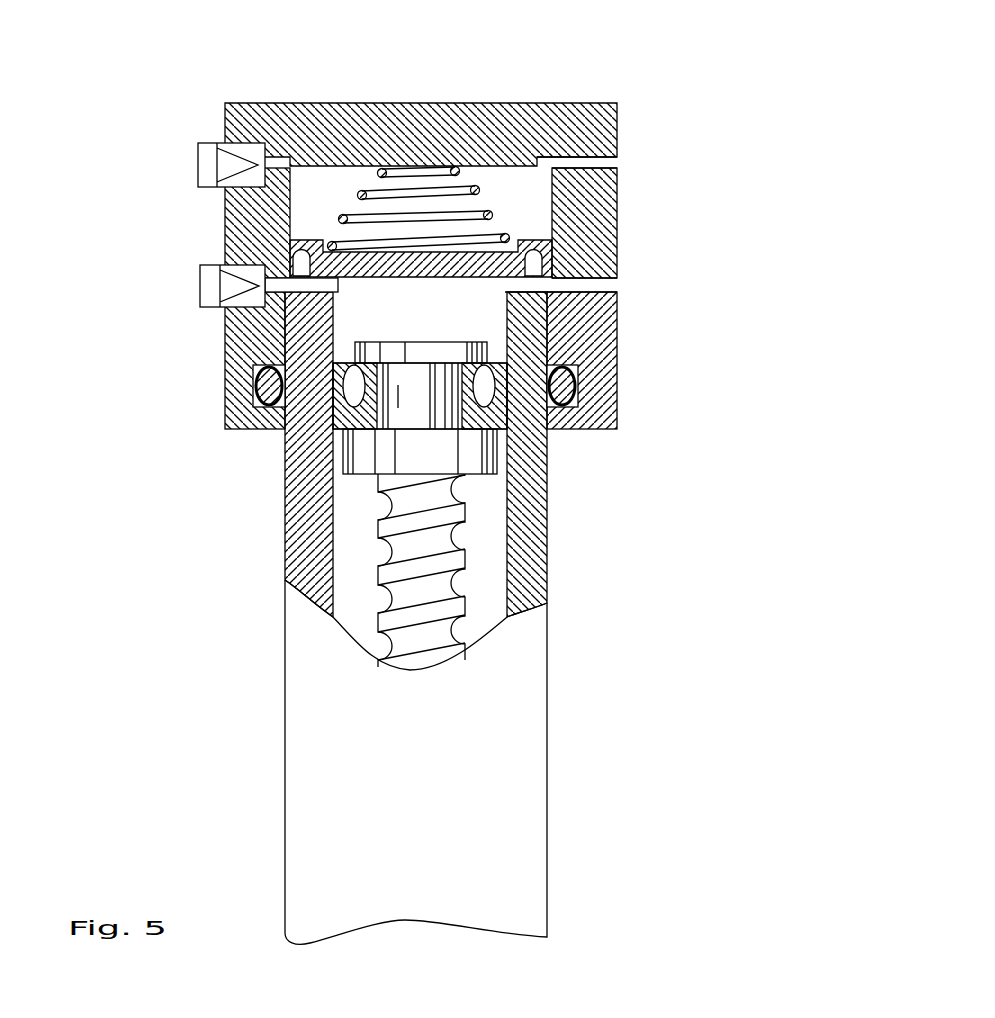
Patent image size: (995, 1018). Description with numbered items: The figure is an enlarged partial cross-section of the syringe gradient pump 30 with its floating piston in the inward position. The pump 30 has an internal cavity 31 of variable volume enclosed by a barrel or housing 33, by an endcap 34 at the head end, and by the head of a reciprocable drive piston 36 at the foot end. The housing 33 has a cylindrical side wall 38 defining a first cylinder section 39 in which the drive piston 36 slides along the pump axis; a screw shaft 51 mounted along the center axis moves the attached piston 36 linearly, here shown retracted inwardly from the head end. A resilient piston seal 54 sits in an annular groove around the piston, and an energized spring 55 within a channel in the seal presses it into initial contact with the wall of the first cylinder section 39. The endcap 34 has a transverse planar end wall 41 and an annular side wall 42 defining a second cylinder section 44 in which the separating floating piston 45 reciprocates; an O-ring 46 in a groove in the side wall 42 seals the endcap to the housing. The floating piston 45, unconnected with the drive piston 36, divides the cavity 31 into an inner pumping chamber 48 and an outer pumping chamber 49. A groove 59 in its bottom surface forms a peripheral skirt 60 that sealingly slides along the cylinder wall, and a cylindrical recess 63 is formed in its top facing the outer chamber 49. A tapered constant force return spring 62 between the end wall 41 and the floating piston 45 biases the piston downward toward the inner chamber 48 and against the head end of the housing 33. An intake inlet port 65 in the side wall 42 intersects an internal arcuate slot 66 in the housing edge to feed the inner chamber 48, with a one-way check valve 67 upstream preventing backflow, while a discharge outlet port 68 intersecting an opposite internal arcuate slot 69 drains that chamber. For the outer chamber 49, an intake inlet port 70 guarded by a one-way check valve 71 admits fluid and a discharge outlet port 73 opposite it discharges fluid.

The gradient pump 30 is at (184, 725).
The internal cavity 31 is at (485, 517).
The housing 33 is at (490, 760).
The endcap 34 is at (420, 122).
The drive piston 36 is at (553, 354).
The cylindrical side wall 38 is at (307, 564).
The first cylinder section 39 is at (283, 345).
The planar end wall 41 is at (468, 155).
The annular side wall 42 is at (457, 350).
The second cylinder section 44 is at (322, 187).
The floating piston 45 is at (317, 240).
The O-ring 46 is at (590, 402).
The inner pumping chamber 48 is at (472, 316).
The outer pumping chamber 49 is at (512, 192).
The screw shaft 51 is at (448, 563).
The piston seal 54 is at (300, 450).
The energized spring 55 is at (518, 410).
The groove 59 is at (297, 255).
The peripheral skirt 60 is at (292, 259).
The return spring 62 is at (398, 195).
The cylindrical recess 63 is at (515, 241).
The intake inlet port 65 is at (300, 312).
The internal arcuate slot 66 is at (372, 327).
The one-way check valve 67 is at (228, 287).
The discharge outlet port 68 is at (598, 285).
The internal arcuate slot 69 is at (547, 268).
The intake inlet port 70 is at (275, 160).
The one-way check valve 71 is at (228, 165).
The discharge outlet port 73 is at (600, 163).